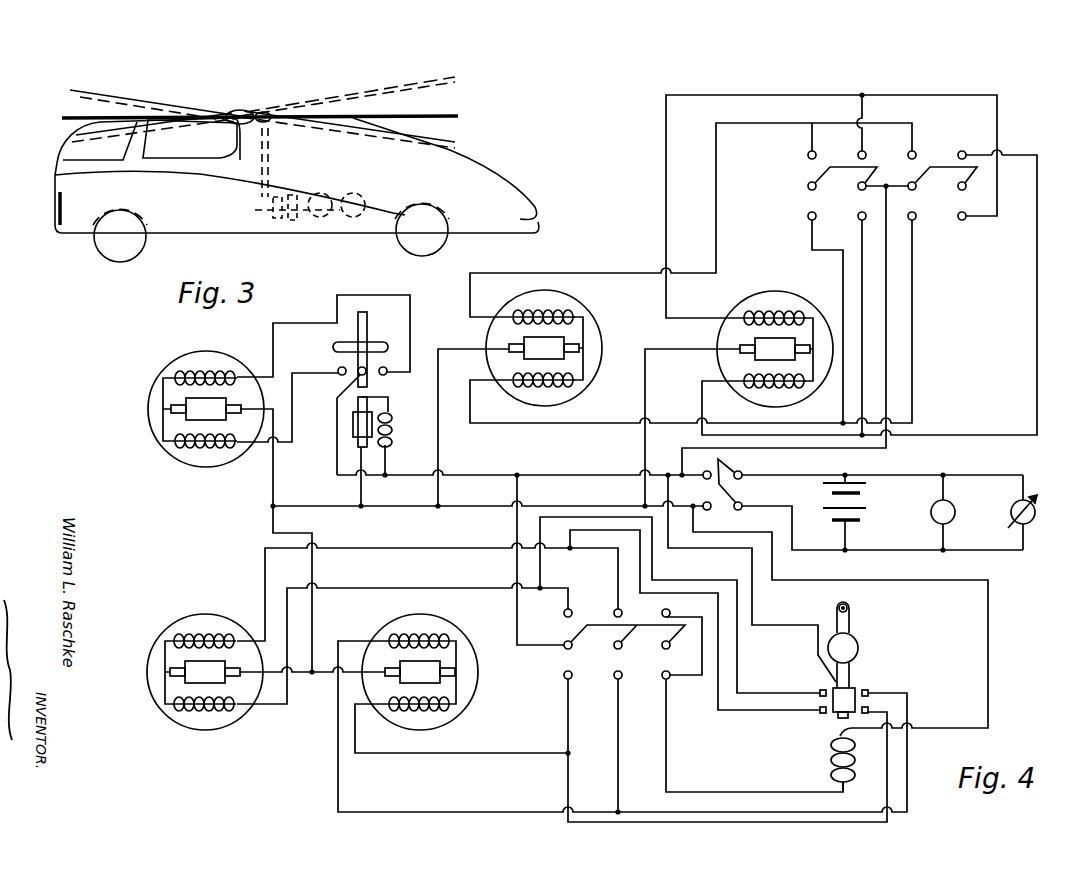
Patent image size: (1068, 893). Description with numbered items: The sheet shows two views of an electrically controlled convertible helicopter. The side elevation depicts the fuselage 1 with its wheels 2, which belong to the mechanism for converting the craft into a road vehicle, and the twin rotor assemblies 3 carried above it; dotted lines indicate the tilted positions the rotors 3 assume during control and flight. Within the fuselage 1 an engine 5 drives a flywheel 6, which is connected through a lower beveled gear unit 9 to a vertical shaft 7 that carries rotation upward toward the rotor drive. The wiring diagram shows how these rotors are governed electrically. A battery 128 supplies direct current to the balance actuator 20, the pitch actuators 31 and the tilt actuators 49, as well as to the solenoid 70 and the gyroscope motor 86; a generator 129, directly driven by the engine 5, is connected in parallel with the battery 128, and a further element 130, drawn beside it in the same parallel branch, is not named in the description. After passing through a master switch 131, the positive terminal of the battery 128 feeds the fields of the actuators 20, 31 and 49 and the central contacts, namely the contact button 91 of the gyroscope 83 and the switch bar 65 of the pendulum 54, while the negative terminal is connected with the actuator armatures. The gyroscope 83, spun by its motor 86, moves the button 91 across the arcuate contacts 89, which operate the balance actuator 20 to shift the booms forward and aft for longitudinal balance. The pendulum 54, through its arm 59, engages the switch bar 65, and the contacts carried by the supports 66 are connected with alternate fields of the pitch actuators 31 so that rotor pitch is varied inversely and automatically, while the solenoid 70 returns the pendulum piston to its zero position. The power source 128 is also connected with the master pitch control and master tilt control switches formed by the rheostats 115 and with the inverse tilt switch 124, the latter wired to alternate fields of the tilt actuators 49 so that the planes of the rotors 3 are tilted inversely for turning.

In FIG. 3, the fuselage 1 is at (538, 198).
In FIG. 3, the wheels 2 is at (107, 244).
In FIG. 3, the rotor assemblies 3 is at (305, 93).
In FIG. 3, the engine 5 is at (353, 193).
In FIG. 3, the flywheel 6 is at (298, 194).
In FIG. 3, the vertical shaft 7 is at (270, 166).
In FIG. 3, the lower beveled gear unit 9 is at (258, 198).
In FIG. 4, the balance actuator 20 is at (150, 395).
In FIG. 4, the pitch actuator 31 is at (152, 690).
In FIG. 4, the tilt actuator 49 is at (604, 320).
In FIG. 4, the pendulum 54 is at (858, 643).
In FIG. 4, the pendulum arm 59 is at (838, 607).
In FIG. 4, the switch bar 65 is at (849, 700).
In FIG. 4, the contact supports 66 is at (869, 694).
In FIG. 4, the solenoid 70 is at (847, 740).
In FIG. 4, the gyroscope 83 is at (384, 344).
In FIG. 4, the gyroscope motor 86 is at (392, 427).
In FIG. 4, the arcuate contacts 89 is at (387, 374).
In FIG. 4, the contact button 91 is at (357, 369).
In FIG. 4, the rheostats 115 is at (526, 687).
In FIG. 4, the inverse tilt switch rheostats 124 is at (940, 218).
In FIG. 4, the battery 128 is at (868, 512).
In FIG. 4, the generator 129 is at (1026, 528).
In FIG. 4, the lamp 130 is at (953, 521).
In FIG. 4, the master switch 131 is at (742, 468).